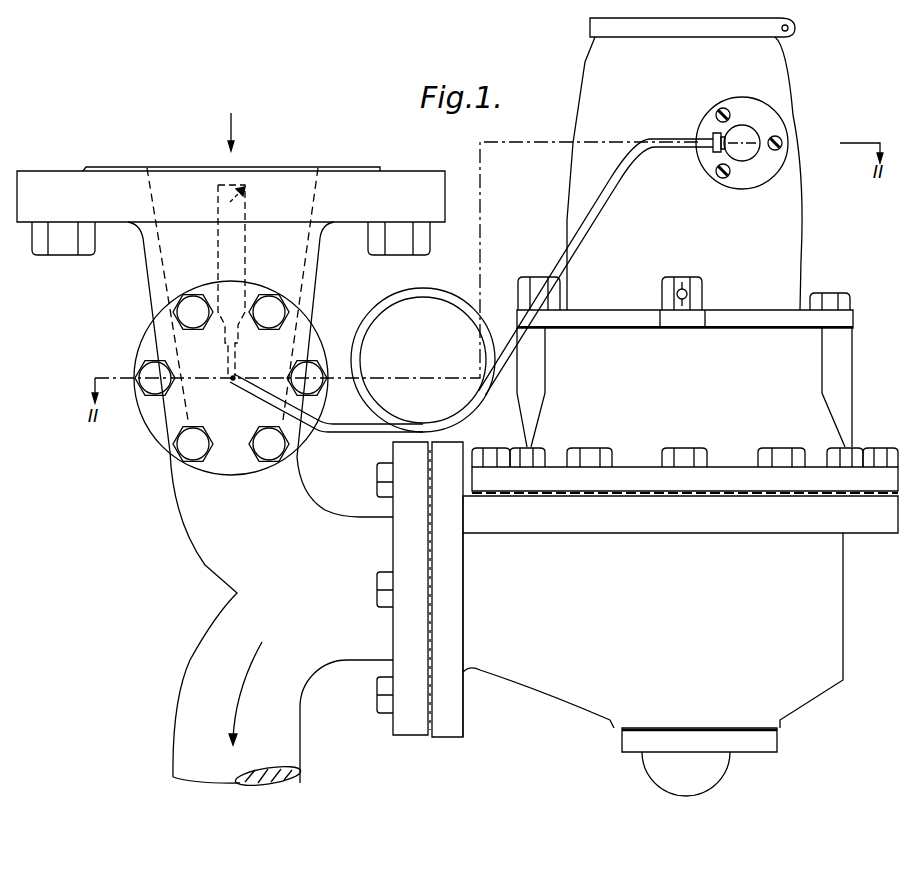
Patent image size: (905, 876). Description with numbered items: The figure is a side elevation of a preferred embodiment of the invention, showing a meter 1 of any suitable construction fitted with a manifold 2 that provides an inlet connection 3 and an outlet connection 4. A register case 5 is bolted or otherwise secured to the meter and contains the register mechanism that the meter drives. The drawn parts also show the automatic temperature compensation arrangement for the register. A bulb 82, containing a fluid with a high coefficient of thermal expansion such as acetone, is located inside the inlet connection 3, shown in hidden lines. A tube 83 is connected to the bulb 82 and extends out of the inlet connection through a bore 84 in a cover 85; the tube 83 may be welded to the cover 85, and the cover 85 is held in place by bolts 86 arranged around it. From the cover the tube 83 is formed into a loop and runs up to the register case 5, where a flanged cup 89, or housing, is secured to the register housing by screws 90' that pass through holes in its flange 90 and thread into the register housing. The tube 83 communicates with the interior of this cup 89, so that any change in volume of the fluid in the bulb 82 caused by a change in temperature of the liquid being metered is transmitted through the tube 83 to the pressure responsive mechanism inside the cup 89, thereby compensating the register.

The meter 1 is at (740, 641).
The manifold 2 is at (374, 634).
The inlet connection 3 is at (155, 258).
The outlet connection 4 is at (197, 672).
The register case 5 is at (787, 233).
The bulb 82 is at (248, 181).
The tube 83 is at (340, 431).
The bore 84 is at (235, 377).
The cover 85 is at (305, 330).
The bolts 86 is at (272, 312).
The flanged cup 89 is at (755, 128).
The flange 90 is at (800, 127).
The screws 90' is at (781, 143).